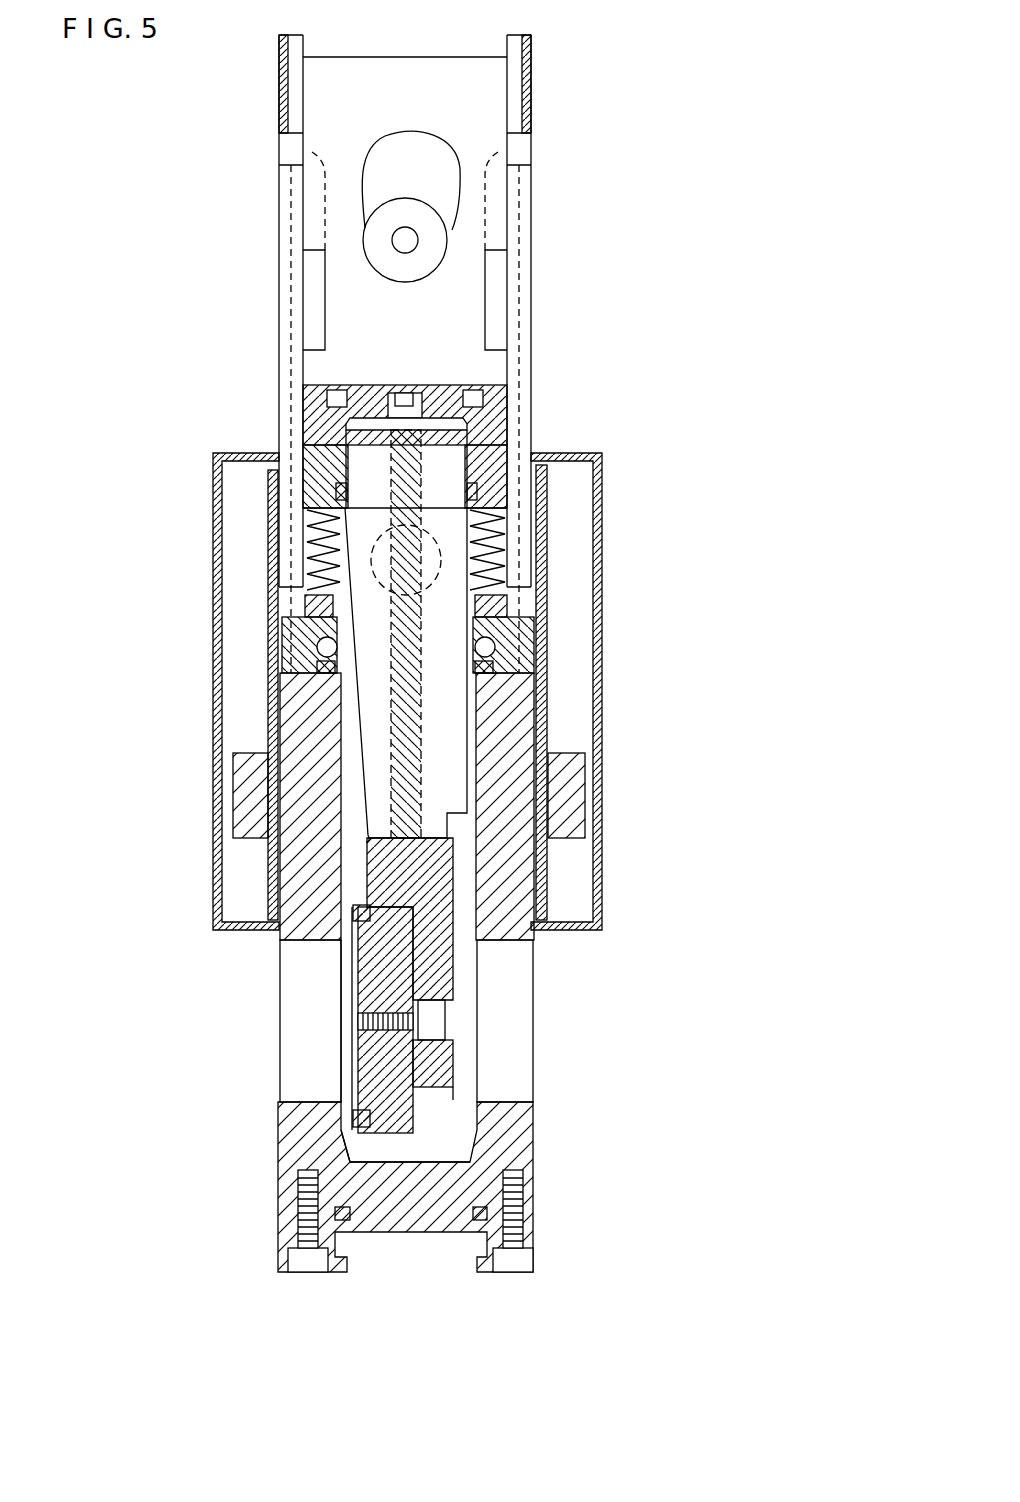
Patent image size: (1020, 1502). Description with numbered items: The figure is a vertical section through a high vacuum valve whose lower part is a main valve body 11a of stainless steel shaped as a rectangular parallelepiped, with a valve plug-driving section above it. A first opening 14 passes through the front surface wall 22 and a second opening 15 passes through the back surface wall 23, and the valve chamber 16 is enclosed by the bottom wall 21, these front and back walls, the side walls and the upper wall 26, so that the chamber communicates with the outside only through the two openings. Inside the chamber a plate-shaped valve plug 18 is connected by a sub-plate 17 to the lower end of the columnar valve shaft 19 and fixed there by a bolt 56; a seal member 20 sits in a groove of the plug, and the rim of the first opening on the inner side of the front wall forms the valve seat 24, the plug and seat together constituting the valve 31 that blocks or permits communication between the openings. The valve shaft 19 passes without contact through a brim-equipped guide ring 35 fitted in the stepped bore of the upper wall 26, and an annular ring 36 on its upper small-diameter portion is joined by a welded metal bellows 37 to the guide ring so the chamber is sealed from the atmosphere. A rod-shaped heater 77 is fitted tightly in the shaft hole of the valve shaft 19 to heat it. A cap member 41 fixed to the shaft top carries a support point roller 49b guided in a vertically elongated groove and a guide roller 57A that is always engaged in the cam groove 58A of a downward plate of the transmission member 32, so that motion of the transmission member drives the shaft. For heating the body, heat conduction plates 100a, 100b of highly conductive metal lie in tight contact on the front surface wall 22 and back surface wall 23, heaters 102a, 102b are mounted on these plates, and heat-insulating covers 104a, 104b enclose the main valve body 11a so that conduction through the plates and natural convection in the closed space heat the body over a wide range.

The transmission member 32 is at (480, 112).
The cap member 41 is at (468, 302).
The cam groove 58A is at (376, 195).
The guide roller 57A is at (403, 283).
The annular ring 36 is at (320, 458).
The valve shaft 19 is at (464, 718).
The heater 77 is at (427, 765).
The support point roller 49b is at (442, 552).
The bellows 37 is at (510, 556).
The brim-equipped guide ring 35 is at (494, 604).
The upper wall 26 is at (529, 648).
The front surface wall 22 is at (302, 710).
The back surface wall 23 is at (527, 857).
The cover 104a is at (220, 531).
The heat conduction plate 100a is at (270, 575).
The heater 102a is at (252, 778).
The cover 104b is at (600, 720).
The heat conduction plate 100b is at (544, 690).
The heater 102b is at (575, 775).
The seal member 20 is at (353, 912).
The sub-plate 17 is at (446, 902).
The bolt 56 is at (390, 1008).
The valve seat 24 is at (350, 1117).
The first opening 14 is at (283, 1003).
The second opening 15 is at (528, 1023).
The main valve body 11a is at (282, 1282).
The valve plug 18 is at (394, 1135).
The valve chamber 16 is at (440, 1148).
The valve 31 is at (338, 1138).
The bottom wall 21 is at (537, 1230).